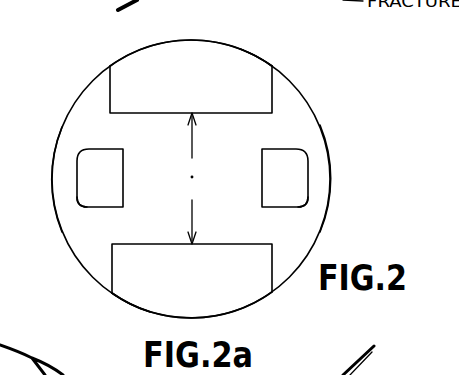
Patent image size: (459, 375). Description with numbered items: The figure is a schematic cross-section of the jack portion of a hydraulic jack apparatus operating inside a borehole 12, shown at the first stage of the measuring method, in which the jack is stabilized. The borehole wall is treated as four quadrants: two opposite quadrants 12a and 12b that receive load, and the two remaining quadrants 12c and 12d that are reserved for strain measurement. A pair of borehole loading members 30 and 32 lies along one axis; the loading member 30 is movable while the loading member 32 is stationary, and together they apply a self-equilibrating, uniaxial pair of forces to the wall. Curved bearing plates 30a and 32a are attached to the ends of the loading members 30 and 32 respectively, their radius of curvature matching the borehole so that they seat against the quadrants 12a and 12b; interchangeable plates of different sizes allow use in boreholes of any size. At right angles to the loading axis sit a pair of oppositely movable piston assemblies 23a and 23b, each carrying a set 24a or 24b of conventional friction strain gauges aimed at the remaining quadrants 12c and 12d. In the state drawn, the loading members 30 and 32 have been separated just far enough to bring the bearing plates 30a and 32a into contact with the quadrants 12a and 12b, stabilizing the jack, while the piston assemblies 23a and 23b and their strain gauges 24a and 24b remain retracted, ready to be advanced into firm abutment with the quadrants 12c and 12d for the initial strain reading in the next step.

The borehole 12 is at (305, 98).
The borehole quadrant 12a is at (245, 32).
The borehole quadrant 12b is at (138, 323).
The remaining borehole quadrant 12c is at (47, 127).
The remaining borehole quadrant 12d is at (338, 125).
The piston assembly 23a is at (113, 185).
The piston assembly 23b is at (300, 185).
The strain gauge set 24a is at (74, 194).
The strain gauge set 24b is at (311, 194).
The borehole loading member 30 is at (202, 85).
The curved bearing plate 30a is at (257, 57).
The borehole loading member 32 is at (208, 285).
The curved bearing plate 32a is at (121, 297).